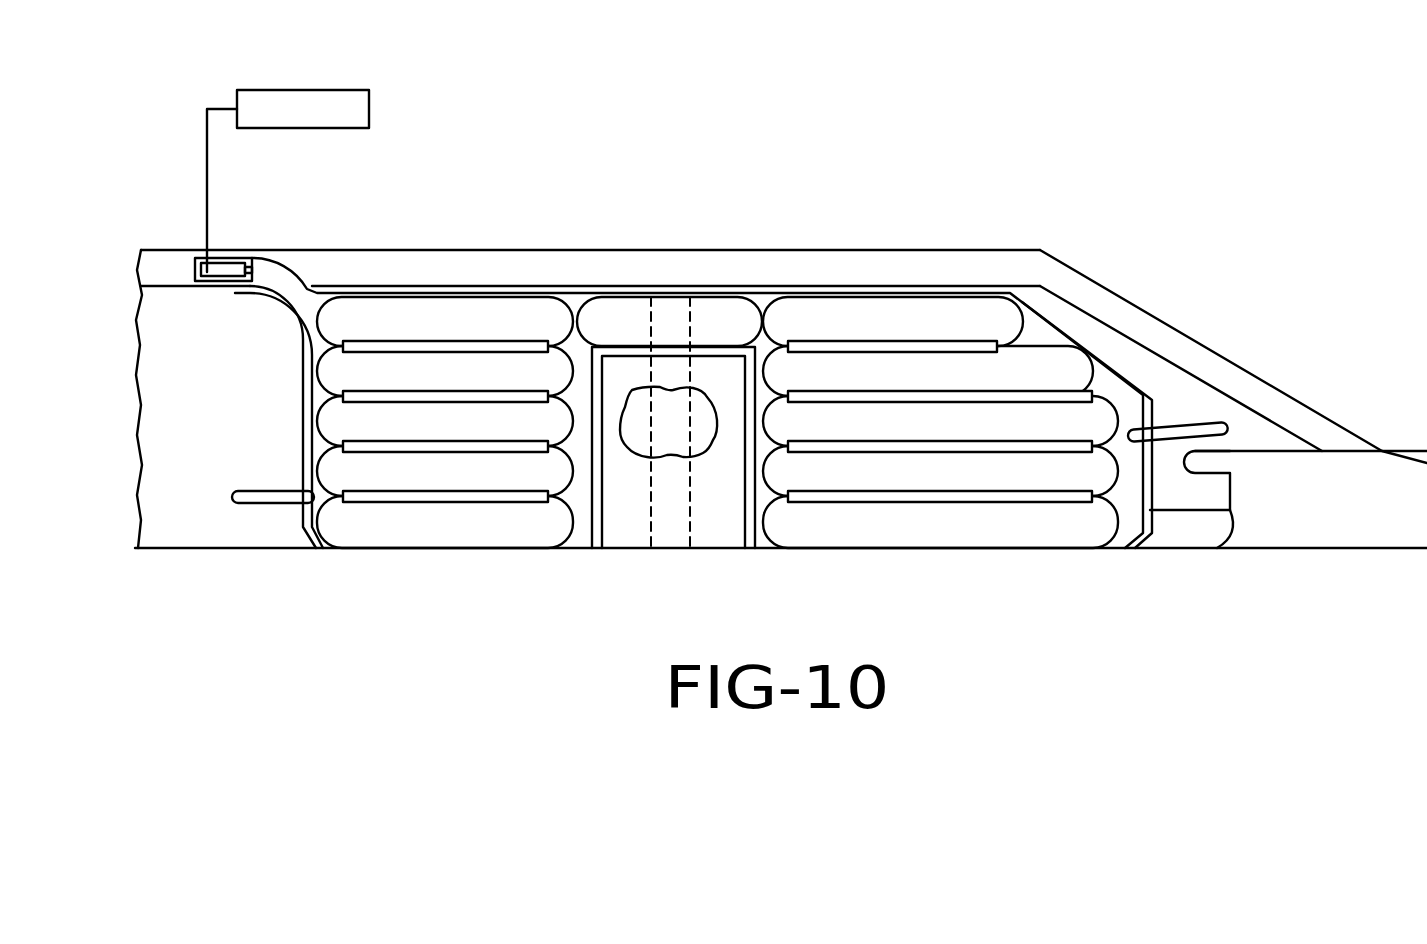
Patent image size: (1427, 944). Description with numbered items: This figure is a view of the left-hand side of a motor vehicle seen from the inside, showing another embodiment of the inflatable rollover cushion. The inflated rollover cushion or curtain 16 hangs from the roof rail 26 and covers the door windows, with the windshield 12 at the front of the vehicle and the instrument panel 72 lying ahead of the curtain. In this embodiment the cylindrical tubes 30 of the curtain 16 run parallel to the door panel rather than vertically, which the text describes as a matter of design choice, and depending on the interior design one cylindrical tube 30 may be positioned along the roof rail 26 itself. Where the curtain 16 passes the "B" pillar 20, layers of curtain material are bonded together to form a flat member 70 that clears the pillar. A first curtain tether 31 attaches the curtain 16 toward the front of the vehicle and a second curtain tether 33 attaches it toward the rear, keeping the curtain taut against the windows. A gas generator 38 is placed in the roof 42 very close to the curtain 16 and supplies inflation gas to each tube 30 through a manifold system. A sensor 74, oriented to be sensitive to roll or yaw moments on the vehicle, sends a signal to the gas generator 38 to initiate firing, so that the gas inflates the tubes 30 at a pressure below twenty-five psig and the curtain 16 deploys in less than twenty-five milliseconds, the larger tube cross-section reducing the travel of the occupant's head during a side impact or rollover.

The windshield 12 is at (1172, 347).
The inflated rollover cushion or curtain 16 is at (1038, 373).
The "B" pillar 20 is at (670, 440).
The roof rail 26 is at (517, 290).
The cylindrical tubes 30 is at (420, 533).
The first curtain tether 31 is at (1222, 432).
The second curtain tether 33 is at (268, 497).
The gas generator 38 is at (227, 276).
The roof 42 is at (912, 250).
The flat member 70 is at (710, 373).
The instrument panel 72 is at (1230, 490).
The sensor 74 is at (300, 90).